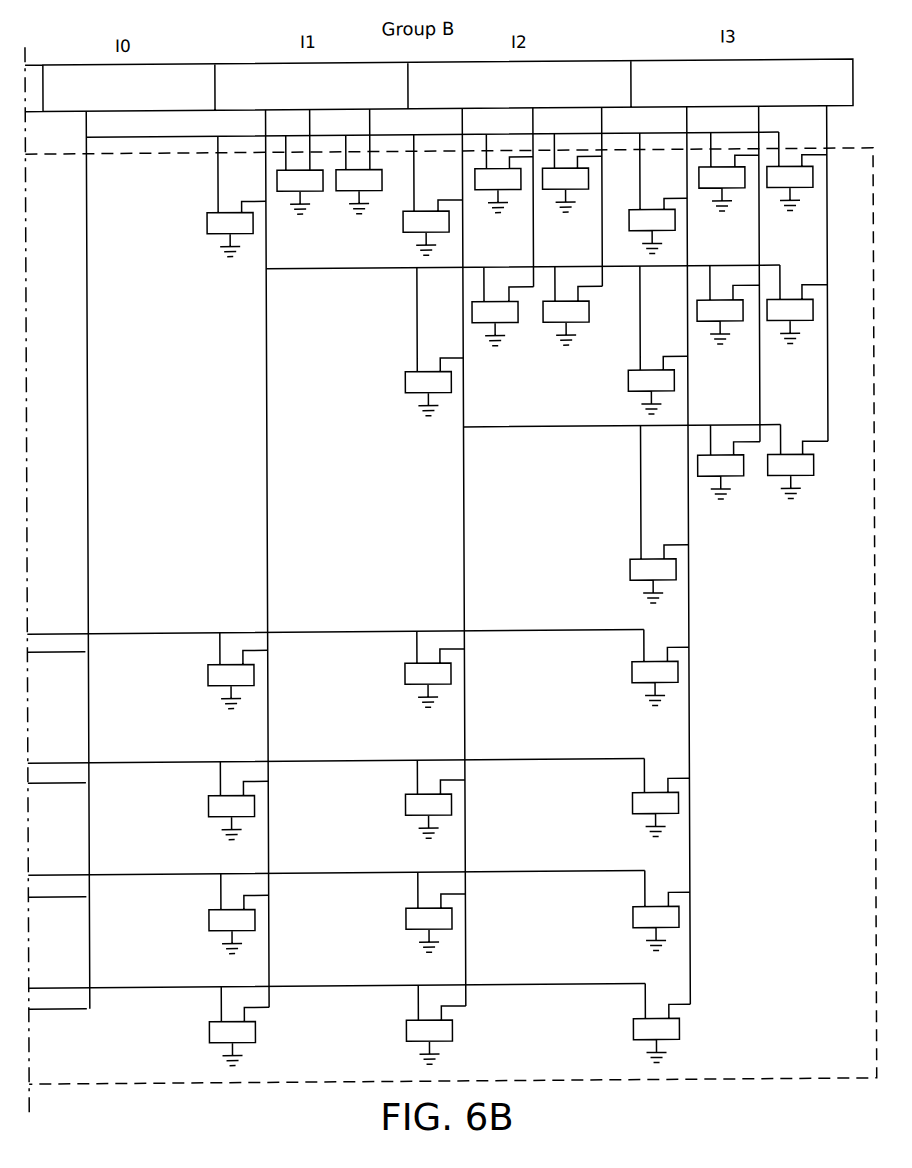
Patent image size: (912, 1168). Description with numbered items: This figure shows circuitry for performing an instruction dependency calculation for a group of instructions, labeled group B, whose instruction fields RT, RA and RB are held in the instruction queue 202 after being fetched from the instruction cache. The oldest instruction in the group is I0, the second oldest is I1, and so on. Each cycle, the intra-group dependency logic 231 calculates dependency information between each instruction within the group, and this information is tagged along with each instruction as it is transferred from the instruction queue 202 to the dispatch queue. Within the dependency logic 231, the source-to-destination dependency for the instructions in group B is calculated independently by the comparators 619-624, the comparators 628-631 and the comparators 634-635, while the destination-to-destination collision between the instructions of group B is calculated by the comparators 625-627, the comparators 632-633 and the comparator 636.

The instruction queue 202 is at (797, 61).
The intra-group dependency logic 231 is at (844, 151).
The comparators 619-624 is at (319, 190).
The comparators 625-627 is at (208, 226).
The comparators 628-631 is at (511, 324).
The comparators 632-633 is at (415, 394).
The comparators 634-635 is at (743, 479).
The comparator 636 is at (629, 573).